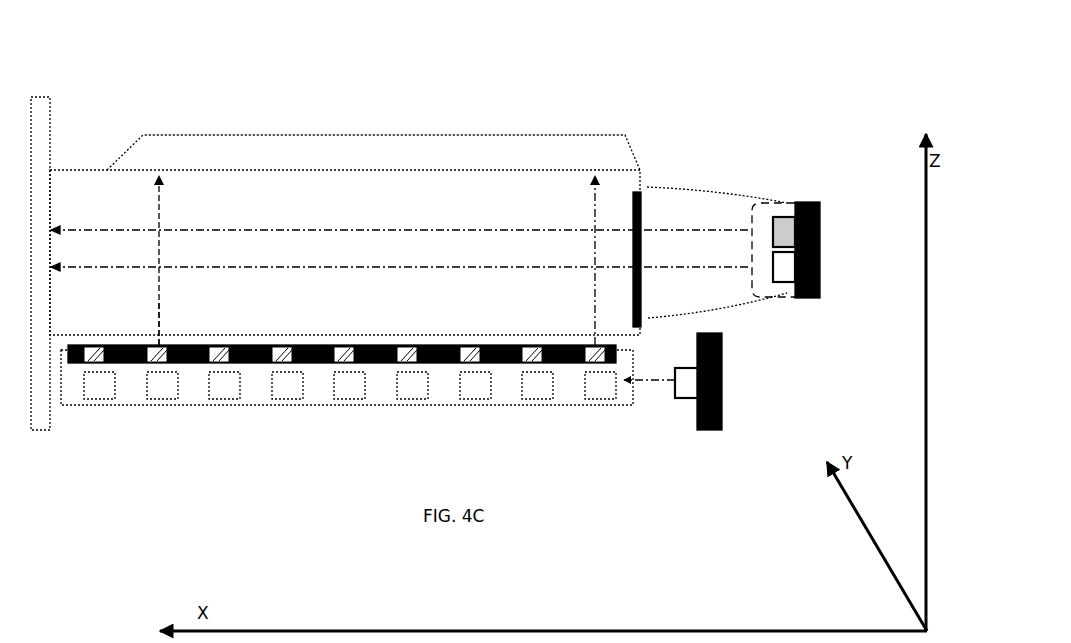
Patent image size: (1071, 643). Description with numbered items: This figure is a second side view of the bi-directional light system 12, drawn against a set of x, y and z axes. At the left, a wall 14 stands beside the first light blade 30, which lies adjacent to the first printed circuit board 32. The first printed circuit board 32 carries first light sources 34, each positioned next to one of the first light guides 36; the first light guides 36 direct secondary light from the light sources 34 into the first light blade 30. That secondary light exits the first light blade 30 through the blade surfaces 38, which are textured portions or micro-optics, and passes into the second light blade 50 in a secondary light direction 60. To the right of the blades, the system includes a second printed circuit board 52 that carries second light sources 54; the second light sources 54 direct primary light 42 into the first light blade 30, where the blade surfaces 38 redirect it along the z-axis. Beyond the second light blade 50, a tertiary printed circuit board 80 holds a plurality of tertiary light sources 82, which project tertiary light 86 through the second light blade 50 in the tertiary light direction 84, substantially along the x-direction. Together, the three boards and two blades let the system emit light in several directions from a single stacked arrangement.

The bi-directional light system 12 is at (878, 60).
The wall / housing 14 is at (46, 119).
The first light blade 30 is at (70, 405).
The first printed circuit board 32 is at (350, 460).
The first light sources 34 is at (235, 405).
The first light guides 36 is at (367, 405).
The blade surfaces 38 is at (176, 405).
The primary light 42 is at (593, 203).
The second light blade 50 is at (640, 170).
The second printed circuit board 52 is at (710, 430).
The second light sources 54 is at (682, 400).
The secondary light direction 60 is at (228, 202).
The tertiary printed circuit board 80 is at (822, 200).
The tertiary light sources 82 is at (793, 212).
The tertiary light direction 84 is at (400, 211).
The tertiary light 86 is at (310, 228).